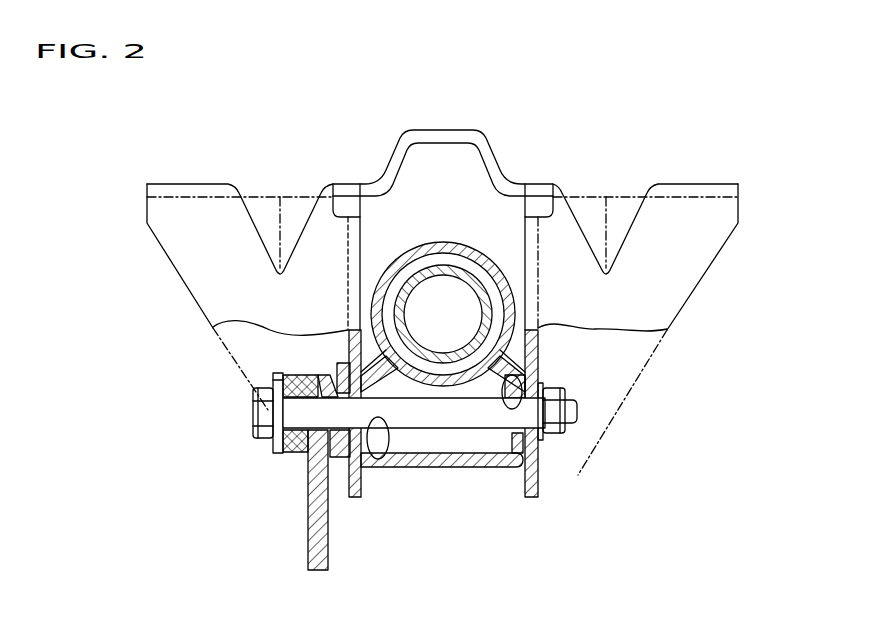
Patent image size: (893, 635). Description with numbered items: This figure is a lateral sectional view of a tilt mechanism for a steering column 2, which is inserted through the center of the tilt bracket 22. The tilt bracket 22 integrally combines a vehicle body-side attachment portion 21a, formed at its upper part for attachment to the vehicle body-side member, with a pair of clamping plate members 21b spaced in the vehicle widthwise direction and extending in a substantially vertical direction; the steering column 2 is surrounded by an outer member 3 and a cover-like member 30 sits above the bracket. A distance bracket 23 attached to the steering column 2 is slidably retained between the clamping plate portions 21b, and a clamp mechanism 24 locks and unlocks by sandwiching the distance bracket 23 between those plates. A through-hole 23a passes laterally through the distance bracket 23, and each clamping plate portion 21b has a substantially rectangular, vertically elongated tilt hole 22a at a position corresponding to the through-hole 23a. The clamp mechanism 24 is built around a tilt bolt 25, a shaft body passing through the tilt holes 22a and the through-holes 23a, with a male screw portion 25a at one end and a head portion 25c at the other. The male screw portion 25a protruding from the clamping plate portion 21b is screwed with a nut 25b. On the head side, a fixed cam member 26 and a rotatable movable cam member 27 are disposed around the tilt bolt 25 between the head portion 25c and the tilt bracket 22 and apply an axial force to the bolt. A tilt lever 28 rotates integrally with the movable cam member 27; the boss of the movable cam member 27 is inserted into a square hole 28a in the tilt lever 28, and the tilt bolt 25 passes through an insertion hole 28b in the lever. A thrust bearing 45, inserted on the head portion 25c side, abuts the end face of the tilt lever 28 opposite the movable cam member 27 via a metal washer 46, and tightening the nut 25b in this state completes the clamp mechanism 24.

The steering column 2 is at (467, 270).
The outer tube 3 is at (394, 266).
The vehicle body-side attachment portion 21a is at (206, 183).
The clamping plate members 21b is at (354, 500).
The tilt bracket 22 is at (541, 478).
The tilt hole 22a is at (362, 332).
The distance bracket 23 is at (416, 468).
The through-hole 23a is at (378, 460).
The clamp mechanism 24 is at (234, 457).
The tilt bolt 25 is at (460, 420).
The male screw portion 25a is at (545, 390).
The nut 25b is at (551, 440).
The head portion 25c is at (253, 418).
The fixed cam member 26 is at (342, 459).
The movable cam member 27 is at (338, 366).
The tilt lever 28 is at (308, 525).
The square hole 28a is at (303, 373).
The insertion hole 28b is at (264, 403).
The cover member 30 is at (530, 158).
The thrust bearing 45 is at (293, 375).
The metal washer 46 is at (300, 450).